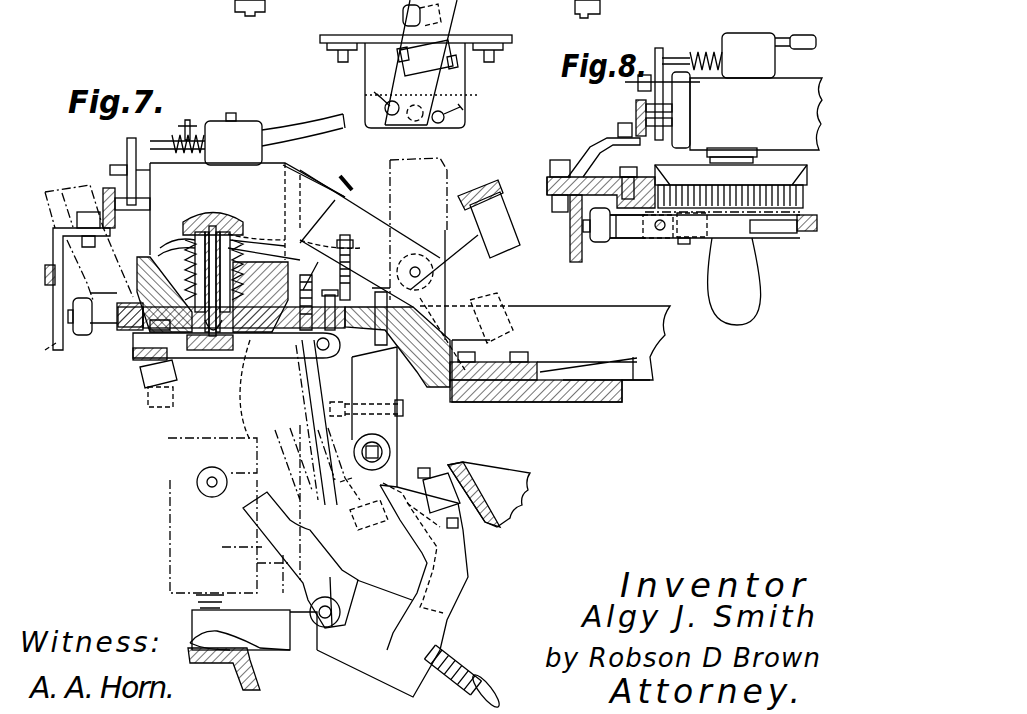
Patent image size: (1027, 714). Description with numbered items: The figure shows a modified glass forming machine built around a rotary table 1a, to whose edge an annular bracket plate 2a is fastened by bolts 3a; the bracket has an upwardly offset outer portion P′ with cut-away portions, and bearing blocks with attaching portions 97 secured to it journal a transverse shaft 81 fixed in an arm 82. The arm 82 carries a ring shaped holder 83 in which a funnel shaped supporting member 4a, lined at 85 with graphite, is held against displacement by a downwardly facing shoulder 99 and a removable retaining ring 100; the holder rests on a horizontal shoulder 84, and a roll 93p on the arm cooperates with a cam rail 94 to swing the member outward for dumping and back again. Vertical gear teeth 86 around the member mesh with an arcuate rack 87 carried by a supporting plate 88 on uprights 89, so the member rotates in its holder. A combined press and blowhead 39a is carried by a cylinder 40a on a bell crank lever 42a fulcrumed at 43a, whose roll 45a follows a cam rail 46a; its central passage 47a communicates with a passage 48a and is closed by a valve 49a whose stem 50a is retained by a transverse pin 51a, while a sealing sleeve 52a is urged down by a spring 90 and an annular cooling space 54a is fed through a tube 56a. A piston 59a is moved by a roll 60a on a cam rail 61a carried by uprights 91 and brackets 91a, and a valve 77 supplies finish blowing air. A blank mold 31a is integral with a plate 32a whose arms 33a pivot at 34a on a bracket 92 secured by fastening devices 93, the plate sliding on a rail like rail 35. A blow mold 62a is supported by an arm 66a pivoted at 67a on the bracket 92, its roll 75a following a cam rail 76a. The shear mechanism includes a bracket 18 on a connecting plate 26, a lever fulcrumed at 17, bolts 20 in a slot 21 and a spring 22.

In FIG. 7, the rotary table 1a is at (560, 369).
In FIG. 7, the annular bracket plate 2a is at (466, 318).
In FIG. 7, the bolts 3a is at (503, 336).
In FIG. 7, the funnel shaped supporting member 4a is at (181, 223).
In FIG. 8, the funnel shaped supporting member 4a is at (731, 164).
In FIG. 7, the fulcrum 17 is at (452, 62).
In FIG. 7, the bracket 18 is at (397, 57).
In FIG. 7, the bolts 20 is at (413, 130).
In FIG. 7, the slot 21 is at (420, 130).
In FIG. 7, the spring 22 is at (436, 100).
In FIG. 7, the intermediate connecting plate 26 is at (411, 81).
In FIG. 7, the blank mold 31a is at (240, 491).
In FIG. 7, the plate 32a is at (214, 347).
In FIG. 7, the arms 33a is at (304, 436).
In FIG. 7, the horizontal pivot elements 34a is at (374, 417).
In FIG. 7, the rail 35 is at (131, 385).
In FIG. 7, the combined press and blowhead 39a is at (160, 244).
In FIG. 8, the combined press and blowhead 39a is at (692, 156).
In FIG. 7, the cylinder 40a is at (247, 200).
In FIG. 8, the cylinder 40a is at (723, 99).
In FIG. 7, the bell crank lever 42a is at (418, 229).
In FIG. 7, the fulcrum 43a is at (411, 299).
In FIG. 7, the roll 45a is at (504, 224).
In FIG. 7, the cam rail 46a is at (489, 178).
In FIG. 7, the central passage 47a is at (265, 240).
In FIG. 7, the passage 48a is at (260, 223).
In FIG. 7, the valve 49a is at (261, 390).
In FIG. 7, the stem 50a is at (260, 292).
In FIG. 7, the transverse pin 51a is at (229, 253).
In FIG. 7, the sealing sleeve 52a is at (190, 286).
In FIG. 7, the annular cooling space 54a is at (205, 262).
In FIG. 7, the tube 56a is at (370, 210).
In FIG. 7, the piston 59a is at (227, 209).
In FIG. 7, the roll 60a is at (120, 179).
In FIG. 8, the roll 60a is at (625, 108).
In FIG. 7, the cam rail 61a is at (81, 248).
In FIG. 8, the cam rail 61a is at (599, 140).
In FIG. 7, the blow mold 62a is at (325, 560).
In FIG. 7, the arm 66a is at (415, 596).
In FIG. 7, the horizontal pivot element 67a is at (397, 447).
In FIG. 7, the roll 75a is at (485, 479).
In FIG. 7, the cam rail 76a is at (456, 510).
In FIG. 7, the valve 77 is at (247, 120).
In FIG. 8, the valve 77 is at (739, 39).
In FIG. 7, the transverse shaft 81 is at (237, 282).
In FIG. 8, the transverse shaft 81 is at (670, 257).
In FIG. 7, the arm 82 is at (238, 418).
In FIG. 8, the arm 82 is at (705, 247).
In FIG. 7, the ring shaped holder 83 is at (181, 383).
In FIG. 8, the ring shaped holder 83 is at (675, 244).
In FIG. 7, the horizontal shoulder 84 is at (301, 296).
In FIG. 7, the lining 85 is at (353, 249).
In FIG. 7, the gear teeth 86 is at (323, 308).
In FIG. 8, the gear teeth 86 is at (748, 273).
In FIG. 8, the arcuate rack 87 is at (624, 241).
In FIG. 7, the supporting plate 88 is at (265, 8).
In FIG. 8, the supporting plate 88 is at (558, 228).
In FIG. 8, the uprights 89 is at (551, 227).
In FIG. 7, the spring 90 is at (233, 301).
In FIG. 7, the uprights 91 is at (55, 316).
In FIG. 8, the brackets 91a is at (596, 170).
In FIG. 7, the bracket 92 is at (384, 404).
In FIG. 7, the fastening devices 93 is at (476, 178).
In FIG. 7, the roll 93p is at (97, 375).
In FIG. 8, the roll 93p is at (595, 244).
In FIG. 7, the cam rail 94 is at (78, 358).
In FIG. 7, the attaching portions 97 is at (319, 5).
In FIG. 7, the shoulder 99 is at (106, 272).
In FIG. 7, the retaining ring 100 is at (236, 355).
In FIG. 7, the outer portion P is at (316, 422).
In FIG. 8, the outer portion P is at (803, 251).